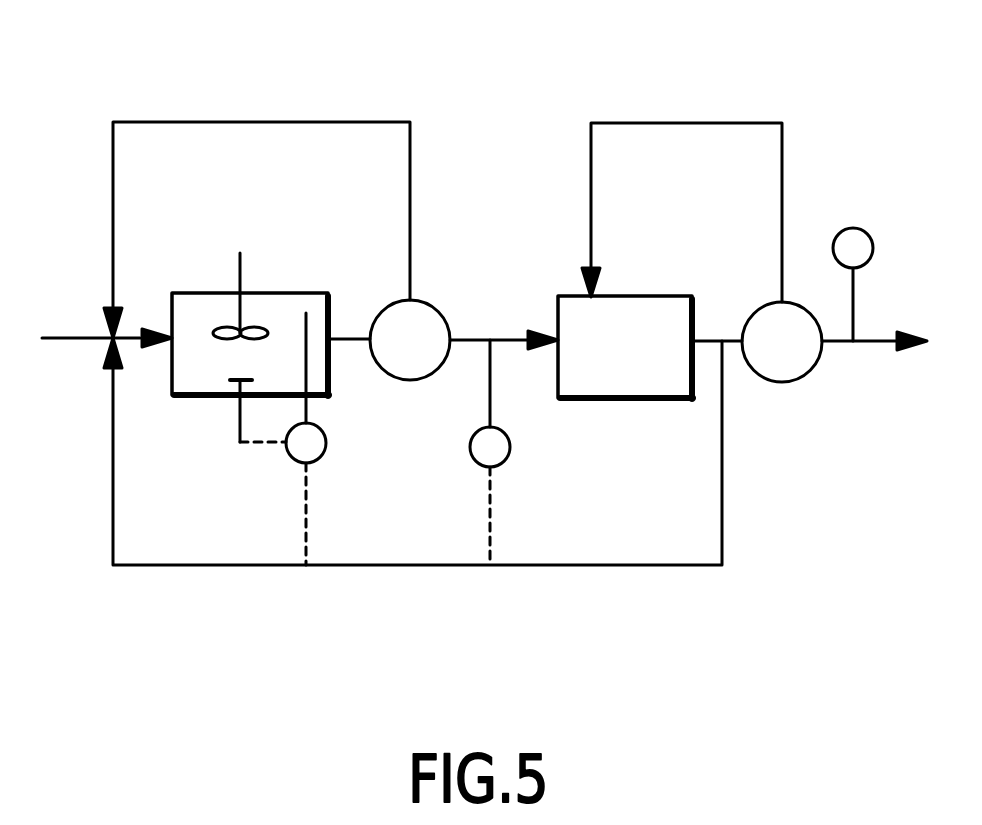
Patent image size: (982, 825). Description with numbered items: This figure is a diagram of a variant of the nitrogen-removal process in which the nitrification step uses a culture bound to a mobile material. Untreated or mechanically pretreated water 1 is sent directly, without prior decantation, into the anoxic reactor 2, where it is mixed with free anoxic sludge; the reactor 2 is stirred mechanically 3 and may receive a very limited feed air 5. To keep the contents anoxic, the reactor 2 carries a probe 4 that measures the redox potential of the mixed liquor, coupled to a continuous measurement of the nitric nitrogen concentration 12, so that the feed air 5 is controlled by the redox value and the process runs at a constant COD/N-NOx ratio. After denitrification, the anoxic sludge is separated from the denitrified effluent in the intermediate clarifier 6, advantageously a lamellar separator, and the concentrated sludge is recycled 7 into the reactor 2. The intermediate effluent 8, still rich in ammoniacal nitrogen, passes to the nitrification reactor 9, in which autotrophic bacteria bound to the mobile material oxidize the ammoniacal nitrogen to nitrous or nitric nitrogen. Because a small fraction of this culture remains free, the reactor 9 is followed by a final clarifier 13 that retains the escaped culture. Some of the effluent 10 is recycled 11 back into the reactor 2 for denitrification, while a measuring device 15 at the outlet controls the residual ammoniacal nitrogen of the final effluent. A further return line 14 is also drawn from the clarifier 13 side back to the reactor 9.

The untreated or mechanically pretreated water 1 is at (62, 337).
The reactor 2 is at (207, 361).
The mechanical stirring 3 is at (239, 268).
The probe 4 is at (318, 461).
The feed air 5 is at (240, 412).
The intermediate clarifier 6 is at (422, 359).
The recycle of anoxic sludge 7 is at (252, 121).
The intermediate effluent 8 is at (507, 335).
The nitrification reactor 9 is at (632, 318).
The effluent 10 is at (876, 343).
The recycle of nitrified effluent 11 is at (400, 565).
The nitric nitrogen measurement 12 is at (473, 456).
The final clarifier 13 is at (795, 361).
The recycle line 14 is at (700, 122).
The measuring device 15 is at (855, 228).